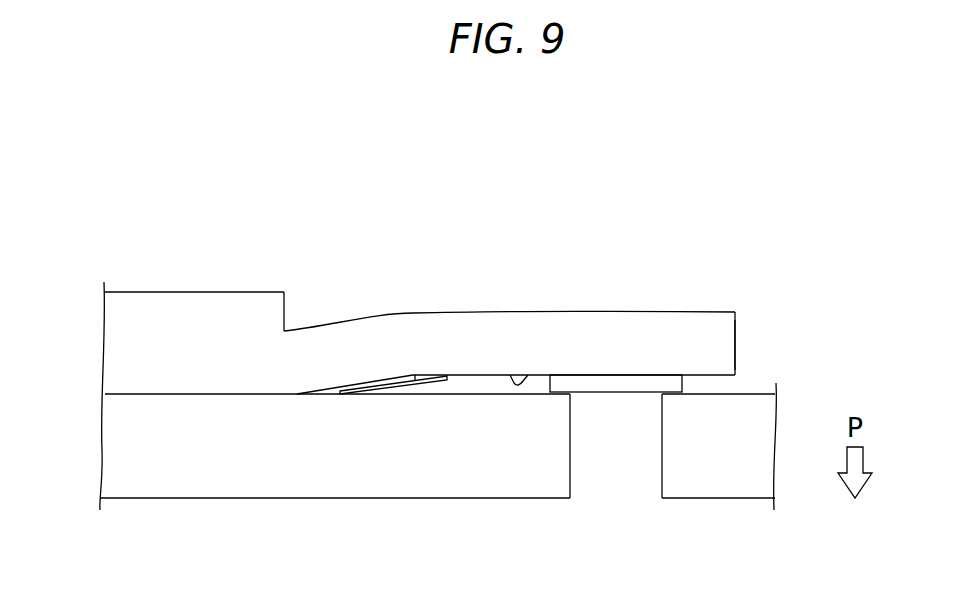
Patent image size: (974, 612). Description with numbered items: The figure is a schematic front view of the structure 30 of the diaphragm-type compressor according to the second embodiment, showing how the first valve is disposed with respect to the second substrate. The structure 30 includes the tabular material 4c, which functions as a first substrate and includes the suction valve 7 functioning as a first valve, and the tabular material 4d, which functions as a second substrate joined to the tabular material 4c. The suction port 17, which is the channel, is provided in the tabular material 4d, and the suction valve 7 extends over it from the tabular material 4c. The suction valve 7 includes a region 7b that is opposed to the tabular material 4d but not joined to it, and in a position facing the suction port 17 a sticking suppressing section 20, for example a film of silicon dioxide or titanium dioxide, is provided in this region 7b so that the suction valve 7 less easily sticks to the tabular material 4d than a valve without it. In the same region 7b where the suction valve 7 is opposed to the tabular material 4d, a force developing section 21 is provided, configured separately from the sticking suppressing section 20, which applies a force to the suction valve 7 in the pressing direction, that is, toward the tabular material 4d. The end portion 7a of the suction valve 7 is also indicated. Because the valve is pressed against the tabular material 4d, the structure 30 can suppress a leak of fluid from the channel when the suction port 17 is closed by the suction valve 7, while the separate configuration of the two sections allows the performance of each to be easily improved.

The structure 30 is at (840, 157).
The tabular material 4c is at (178, 312).
The tabular material 4d is at (167, 460).
The force developing section 21 is at (413, 376).
The region 7b is at (510, 375).
The sticking suppressing section 20 is at (610, 383).
The suction valve 7 is at (698, 330).
The end portion of terminal 7a is at (735, 343).
The suction port 17 is at (610, 455).